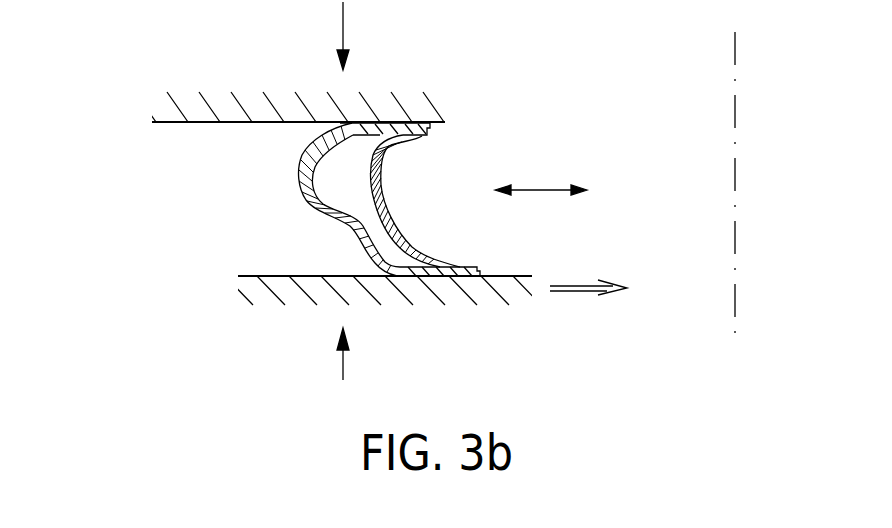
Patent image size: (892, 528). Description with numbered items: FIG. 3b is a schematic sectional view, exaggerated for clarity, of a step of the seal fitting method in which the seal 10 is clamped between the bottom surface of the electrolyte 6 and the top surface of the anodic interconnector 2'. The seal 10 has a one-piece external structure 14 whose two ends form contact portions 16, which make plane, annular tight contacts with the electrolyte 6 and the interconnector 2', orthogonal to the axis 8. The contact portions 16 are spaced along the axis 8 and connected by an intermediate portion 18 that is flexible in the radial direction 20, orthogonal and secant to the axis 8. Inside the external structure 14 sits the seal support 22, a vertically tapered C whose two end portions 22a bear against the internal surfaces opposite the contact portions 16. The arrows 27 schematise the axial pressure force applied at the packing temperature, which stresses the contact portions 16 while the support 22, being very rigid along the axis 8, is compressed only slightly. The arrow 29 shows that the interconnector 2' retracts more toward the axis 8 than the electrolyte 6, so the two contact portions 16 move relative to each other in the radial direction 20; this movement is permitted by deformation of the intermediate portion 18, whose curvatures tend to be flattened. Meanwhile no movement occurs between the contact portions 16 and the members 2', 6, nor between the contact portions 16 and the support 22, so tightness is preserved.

The electrolyte 6 is at (230, 103).
The anodic interconnector 2' is at (383, 322).
The axis 8 is at (735, 43).
The seal 10 is at (379, 203).
The one-piece external structure 14 is at (320, 188).
The contact portions 16 is at (413, 122).
The intermediate portion 18 is at (311, 199).
The radial direction 20 is at (543, 185).
The seal support 22 is at (454, 201).
The end portions 22a is at (416, 138).
The arrows 27 is at (343, 33).
The arrow 29 is at (578, 292).